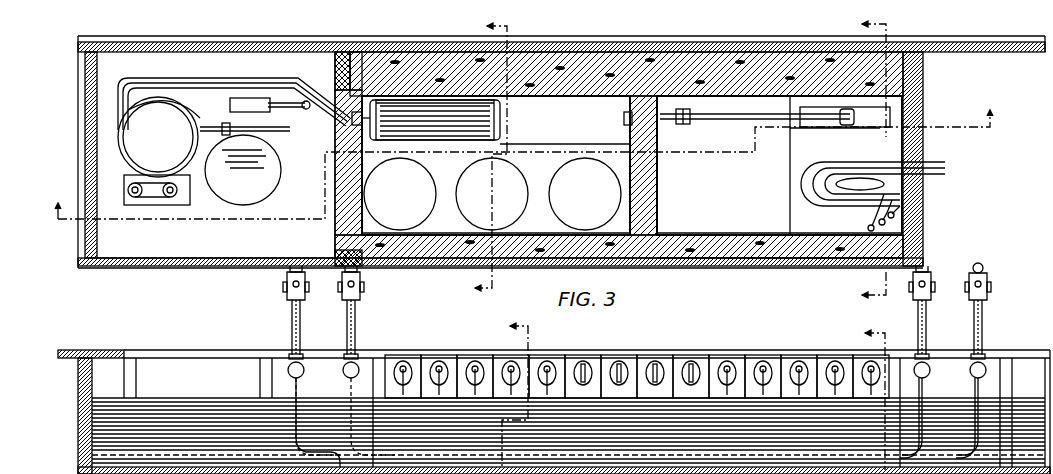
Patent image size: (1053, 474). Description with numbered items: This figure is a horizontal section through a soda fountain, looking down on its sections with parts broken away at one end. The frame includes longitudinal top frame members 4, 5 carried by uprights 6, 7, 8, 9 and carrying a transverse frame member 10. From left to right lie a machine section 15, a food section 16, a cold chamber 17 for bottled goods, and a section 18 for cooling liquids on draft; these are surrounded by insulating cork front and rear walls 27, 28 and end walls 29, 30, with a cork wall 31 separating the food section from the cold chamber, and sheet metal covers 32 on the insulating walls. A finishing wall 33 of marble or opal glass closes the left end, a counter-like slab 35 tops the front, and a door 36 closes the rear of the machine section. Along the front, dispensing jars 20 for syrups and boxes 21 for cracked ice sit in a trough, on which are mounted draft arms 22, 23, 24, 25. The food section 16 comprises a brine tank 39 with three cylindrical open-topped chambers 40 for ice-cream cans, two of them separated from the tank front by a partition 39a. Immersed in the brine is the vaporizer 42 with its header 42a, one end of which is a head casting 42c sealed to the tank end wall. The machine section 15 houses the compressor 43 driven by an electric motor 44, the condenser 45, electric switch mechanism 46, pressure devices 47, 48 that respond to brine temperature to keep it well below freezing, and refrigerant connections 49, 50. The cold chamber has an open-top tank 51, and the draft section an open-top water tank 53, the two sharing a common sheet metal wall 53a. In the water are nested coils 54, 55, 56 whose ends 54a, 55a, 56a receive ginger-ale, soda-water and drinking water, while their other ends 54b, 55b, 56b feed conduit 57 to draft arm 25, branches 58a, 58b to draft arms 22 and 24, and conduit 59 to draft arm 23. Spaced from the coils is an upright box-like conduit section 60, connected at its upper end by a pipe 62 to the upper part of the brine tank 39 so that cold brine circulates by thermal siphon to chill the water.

The longitudinal top frame member 4 is at (516, 154).
The longitudinal top frame member 5 is at (491, 235).
The upright 6 is at (895, 235).
The upright 7 is at (915, 52).
The upright 8 is at (368, 262).
The upright 9 is at (345, 55).
The transverse frame member 10 is at (345, 466).
The machine section 15 is at (219, 266).
The food section 16 is at (445, 222).
The cold chamber 17 is at (713, 222).
The section for cooling liquids on draft 18 is at (810, 225).
The dispensing jar 20 is at (455, 356).
The box 21 is at (182, 418).
The draft arm 22 is at (290, 318).
The draft arm 23 is at (360, 312).
The draft arm 24 is at (916, 318).
The draft arm 25 is at (990, 316).
The front wall 27 is at (622, 52).
The rear wall 28 is at (672, 266).
The end wall 29 is at (340, 172).
The end wall 30 is at (923, 243).
The wall 31 is at (660, 195).
The sheet metal cover 32 is at (923, 95).
The finishing wall 33 is at (85, 242).
The counter-like slab 35 is at (75, 350).
The door 36 is at (166, 268).
The tank 39 is at (528, 226).
The partition 39a is at (545, 143).
The cylindrical open-topped chamber 40 is at (428, 166).
The vaporizer 42 is at (407, 108).
The header 42a is at (440, 108).
The head casting 42c is at (370, 58).
The compressor 43 is at (120, 115).
The electric motor 44 is at (250, 196).
The condenser 45 is at (135, 133).
The electric switch mechanism 46 is at (162, 206).
The pressure device 47 is at (135, 206).
The pressure device 48 is at (182, 206).
The refrigerant connection 49 is at (245, 80).
The refrigerant connection 50 is at (300, 84).
The tank 51 is at (742, 226).
The tank 53 is at (822, 266).
The common sheet metal wall 53a is at (790, 148).
The coil 54 is at (815, 182).
The coil 55 is at (812, 197).
The coil 56 is at (812, 206).
The coil end 54a is at (945, 176).
The coil end 55a is at (945, 168).
The coil end 56a is at (945, 161).
The coil end 54b is at (910, 210).
The coil end 55b is at (908, 220).
The coil end 56b is at (908, 229).
The conduit 57 is at (975, 392).
The conduit branch 58a is at (323, 366).
The conduit branch 58b is at (930, 374).
The conduit 59 is at (345, 380).
The cooling fluid conduit section 60 is at (892, 117).
The pipe 62 is at (742, 122).